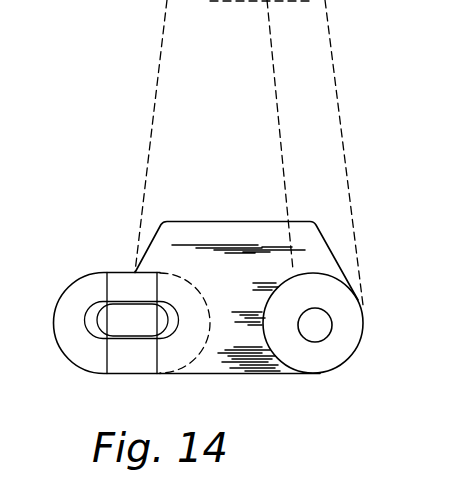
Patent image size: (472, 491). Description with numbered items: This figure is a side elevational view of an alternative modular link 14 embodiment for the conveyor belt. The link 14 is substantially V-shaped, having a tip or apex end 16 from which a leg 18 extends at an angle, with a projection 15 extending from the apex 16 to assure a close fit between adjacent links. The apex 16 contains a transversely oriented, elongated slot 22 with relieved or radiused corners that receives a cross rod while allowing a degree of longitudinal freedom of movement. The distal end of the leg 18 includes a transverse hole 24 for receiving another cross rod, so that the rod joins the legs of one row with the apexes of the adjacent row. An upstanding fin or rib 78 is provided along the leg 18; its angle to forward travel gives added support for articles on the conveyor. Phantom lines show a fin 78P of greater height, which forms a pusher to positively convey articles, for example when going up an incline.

The link 14 is at (195, 362).
The projection 15 is at (166, 364).
The apex end 16 is at (71, 284).
The leg 18 is at (243, 304).
The slot 22 is at (89, 326).
The transverse hole 24 is at (327, 326).
The fin 78 is at (220, 222).
The fin of greater height 78P is at (308, 93).